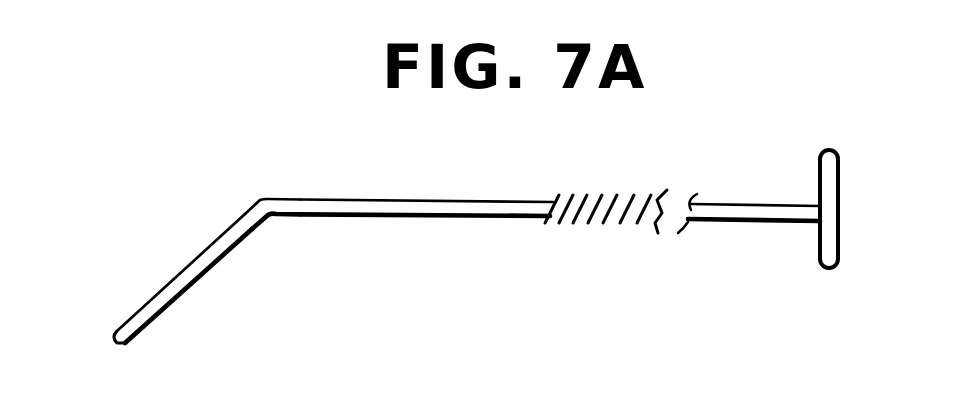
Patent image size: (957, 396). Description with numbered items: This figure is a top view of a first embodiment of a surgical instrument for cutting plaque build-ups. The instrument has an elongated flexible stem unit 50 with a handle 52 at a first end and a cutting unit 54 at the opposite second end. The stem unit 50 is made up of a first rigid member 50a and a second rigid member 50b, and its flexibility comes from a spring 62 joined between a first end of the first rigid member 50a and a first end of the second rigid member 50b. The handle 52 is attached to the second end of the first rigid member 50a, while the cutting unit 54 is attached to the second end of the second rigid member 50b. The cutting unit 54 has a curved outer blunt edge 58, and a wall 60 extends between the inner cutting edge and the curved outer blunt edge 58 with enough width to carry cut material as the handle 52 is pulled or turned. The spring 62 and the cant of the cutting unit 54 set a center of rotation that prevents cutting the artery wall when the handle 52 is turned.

The elongated flexible stem unit 50 is at (518, 216).
The first rigid member 50a is at (761, 205).
The second rigid member 50b is at (406, 199).
The handle 52 is at (838, 170).
The cutting unit 54 is at (203, 262).
The curved outer blunt edge 58 is at (163, 298).
The wall 60 is at (235, 251).
The spring 62 is at (618, 223).